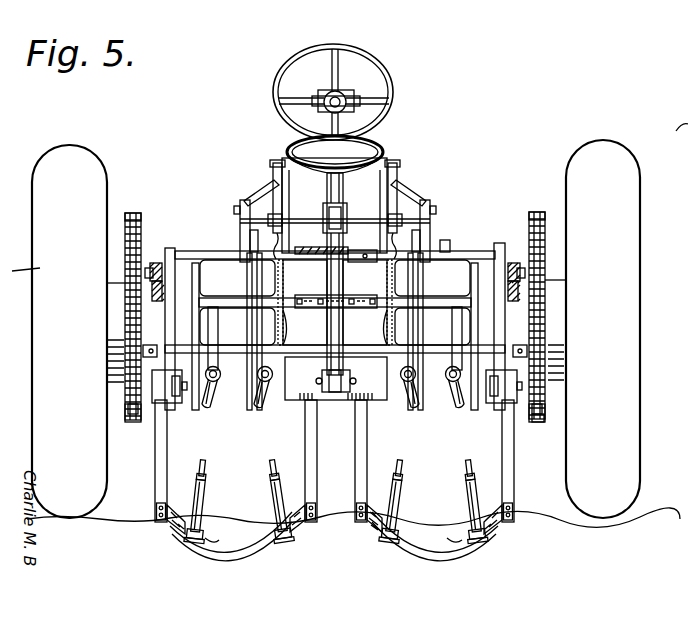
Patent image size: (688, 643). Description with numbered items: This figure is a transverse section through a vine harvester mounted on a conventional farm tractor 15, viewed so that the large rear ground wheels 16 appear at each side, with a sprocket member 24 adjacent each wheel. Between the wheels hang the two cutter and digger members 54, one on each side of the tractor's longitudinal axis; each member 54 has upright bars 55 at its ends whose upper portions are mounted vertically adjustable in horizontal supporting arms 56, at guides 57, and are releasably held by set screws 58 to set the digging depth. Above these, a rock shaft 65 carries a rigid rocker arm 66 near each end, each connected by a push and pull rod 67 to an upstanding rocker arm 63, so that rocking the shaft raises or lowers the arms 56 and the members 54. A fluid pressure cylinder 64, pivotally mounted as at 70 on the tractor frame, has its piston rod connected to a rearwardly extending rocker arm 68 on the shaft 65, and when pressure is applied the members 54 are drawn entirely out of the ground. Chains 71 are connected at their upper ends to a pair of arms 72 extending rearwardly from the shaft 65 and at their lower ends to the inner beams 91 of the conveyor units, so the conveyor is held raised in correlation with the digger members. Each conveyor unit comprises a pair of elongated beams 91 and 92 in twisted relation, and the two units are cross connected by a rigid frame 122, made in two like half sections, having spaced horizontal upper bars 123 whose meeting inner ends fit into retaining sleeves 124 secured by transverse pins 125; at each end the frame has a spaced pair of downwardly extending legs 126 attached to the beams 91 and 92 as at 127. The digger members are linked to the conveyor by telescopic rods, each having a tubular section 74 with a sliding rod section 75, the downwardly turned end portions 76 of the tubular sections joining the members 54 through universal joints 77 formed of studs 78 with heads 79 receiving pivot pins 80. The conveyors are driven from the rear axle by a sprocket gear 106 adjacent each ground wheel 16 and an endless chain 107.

The farm tractor 15 is at (371, 130).
The ground wheels 16 is at (632, 380).
The sprocket 24 is at (154, 264).
The cutter and digger member 54 is at (246, 558).
The upright bars 55 is at (162, 466).
The horizontal supporting arms 56 is at (170, 405).
The guides 57 is at (152, 411).
The set screws 58 is at (522, 408).
The rocker arm 63 is at (240, 211).
The fluid pressure cylinder 64 is at (323, 362).
The rock shaft 65 is at (308, 223).
The rocker arm 66 is at (272, 167).
The push and pull rod 67 is at (252, 192).
The rearwardly extending rocker arm 68 is at (322, 209).
The pivotal mounting 70 is at (340, 385).
The chains 71 is at (262, 244).
The arms 72 is at (283, 218).
The tubular section 74 is at (270, 480).
The rod section 75 is at (208, 463).
The downwardly turned end portions 76 is at (275, 502).
The universal joints 77 is at (201, 548).
The studs 78 is at (213, 560).
The heads 79 is at (186, 538).
The pivot pins 80 is at (195, 547).
The beam 91 is at (215, 388).
The beam 92 is at (270, 402).
The sprocket gear 106 is at (128, 298).
The endless chain 107 is at (143, 216).
The rigid frame 122 is at (452, 241).
The horizontal upper bars 123 is at (221, 297).
The retaining sleeves 124 is at (304, 294).
The transverse pins 125 is at (358, 296).
The downwardly extending legs 126 is at (236, 326).
The leg connection 127 is at (212, 406).